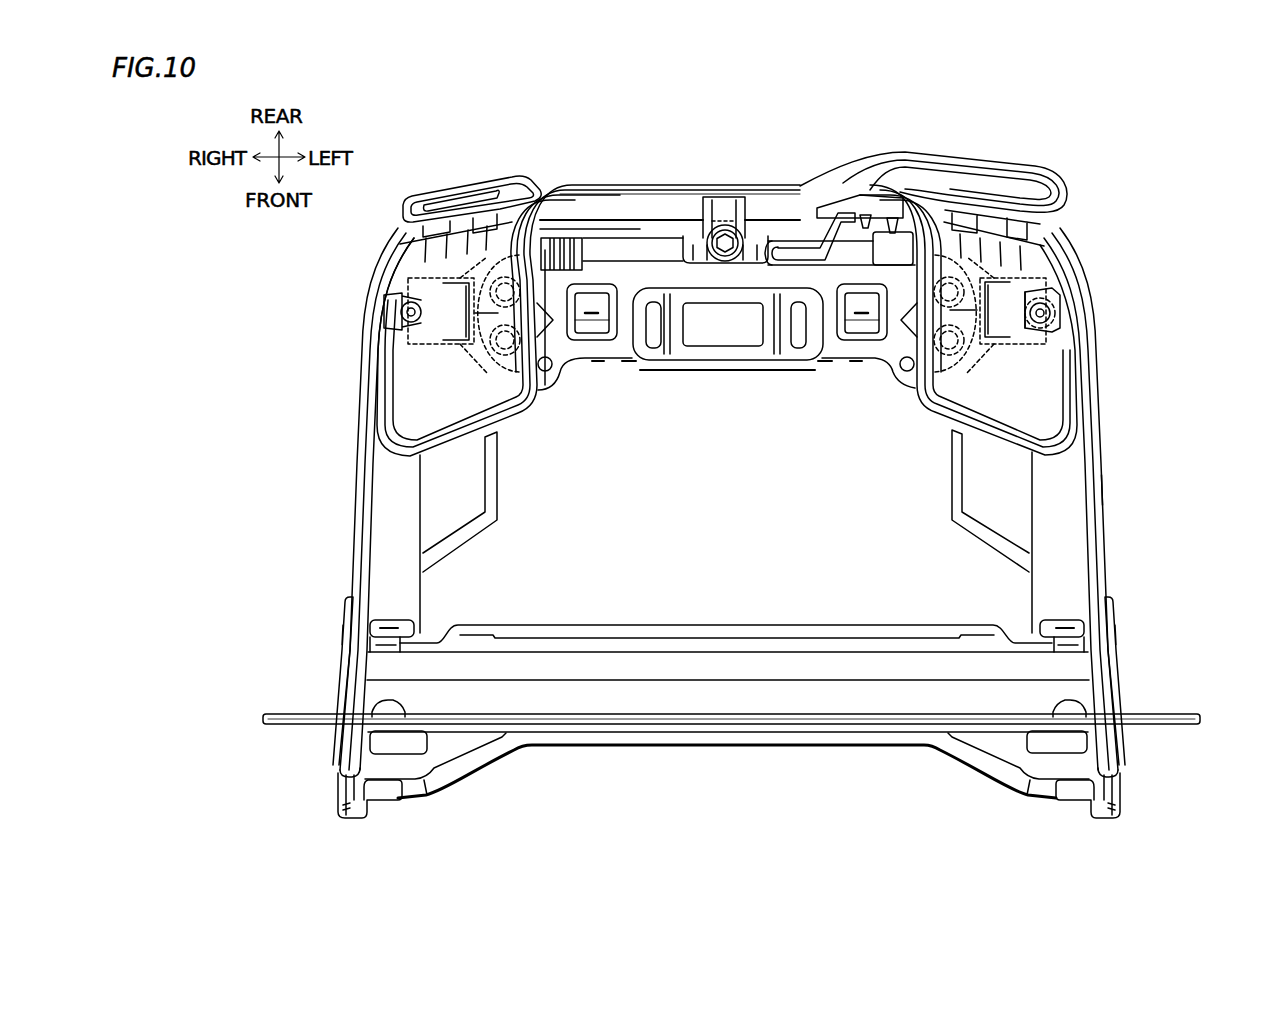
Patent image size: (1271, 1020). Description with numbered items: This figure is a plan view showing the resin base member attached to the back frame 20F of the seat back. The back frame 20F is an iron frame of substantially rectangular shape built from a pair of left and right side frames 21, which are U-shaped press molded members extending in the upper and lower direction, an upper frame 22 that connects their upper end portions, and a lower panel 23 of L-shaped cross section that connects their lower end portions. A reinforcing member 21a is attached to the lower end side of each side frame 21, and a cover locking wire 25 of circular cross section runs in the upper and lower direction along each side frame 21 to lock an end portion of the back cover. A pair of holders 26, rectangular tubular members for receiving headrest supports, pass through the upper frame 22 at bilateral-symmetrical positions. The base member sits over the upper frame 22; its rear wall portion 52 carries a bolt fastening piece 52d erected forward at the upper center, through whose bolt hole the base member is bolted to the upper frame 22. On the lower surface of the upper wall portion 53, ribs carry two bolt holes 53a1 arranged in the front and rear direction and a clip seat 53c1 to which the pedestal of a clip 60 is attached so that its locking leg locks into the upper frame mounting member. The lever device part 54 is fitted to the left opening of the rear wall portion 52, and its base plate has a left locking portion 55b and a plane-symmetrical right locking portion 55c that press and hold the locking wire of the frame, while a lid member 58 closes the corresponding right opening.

The back frame 20F is at (1114, 495).
The side frame 21 is at (354, 520).
The reinforcing member 21a is at (343, 620).
The upper frame 22 is at (645, 277).
The lower panel 23 is at (718, 626).
The cover locking wire 25 is at (498, 485).
The holder 26 is at (587, 292).
The rear wall portion 52 is at (762, 203).
The bolt fastening piece 52d is at (717, 214).
The upper wall portion 53 is at (418, 393).
The bolt hole 53a1 is at (985, 266).
The clip seat 53c1 is at (1060, 322).
The lever device part 54 is at (1040, 170).
The left locking portion 55b is at (883, 225).
The right locking portion 55c is at (782, 250).
The lid member 58 is at (440, 198).
The clip 60 is at (1060, 303).